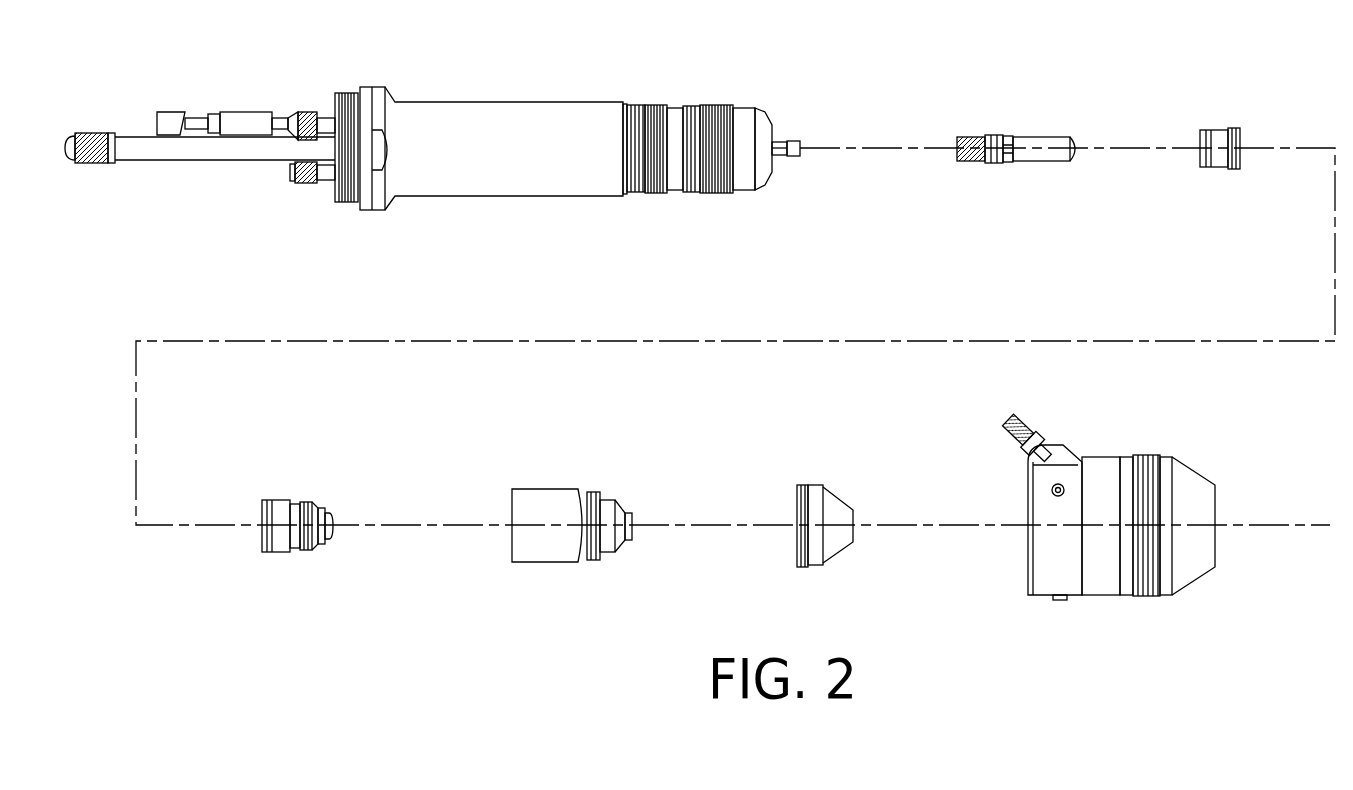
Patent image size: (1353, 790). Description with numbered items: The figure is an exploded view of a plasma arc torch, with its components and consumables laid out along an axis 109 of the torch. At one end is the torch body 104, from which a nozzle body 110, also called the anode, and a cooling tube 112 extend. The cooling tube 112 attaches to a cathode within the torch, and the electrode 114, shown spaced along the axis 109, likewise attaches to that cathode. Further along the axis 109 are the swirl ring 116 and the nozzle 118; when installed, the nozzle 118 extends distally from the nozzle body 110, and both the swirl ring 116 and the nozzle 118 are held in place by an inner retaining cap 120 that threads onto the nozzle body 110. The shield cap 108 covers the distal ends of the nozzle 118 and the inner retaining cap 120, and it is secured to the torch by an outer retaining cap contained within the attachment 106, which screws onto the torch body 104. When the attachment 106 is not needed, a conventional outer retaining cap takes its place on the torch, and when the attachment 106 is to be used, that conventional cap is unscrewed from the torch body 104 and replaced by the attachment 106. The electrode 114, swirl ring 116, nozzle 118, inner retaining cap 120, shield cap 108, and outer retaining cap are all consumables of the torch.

The torch body 104 is at (510, 102).
The attachment 106 is at (1098, 596).
The shield cap 108 is at (822, 565).
The axis 109 is at (1298, 525).
The nozzle body 110 is at (722, 108).
The cooling tube 112 is at (792, 158).
The electrode 114 is at (1038, 135).
The swirl ring 116 is at (1205, 130).
The nozzle 118 is at (302, 553).
The inner retaining cap 120 is at (547, 562).